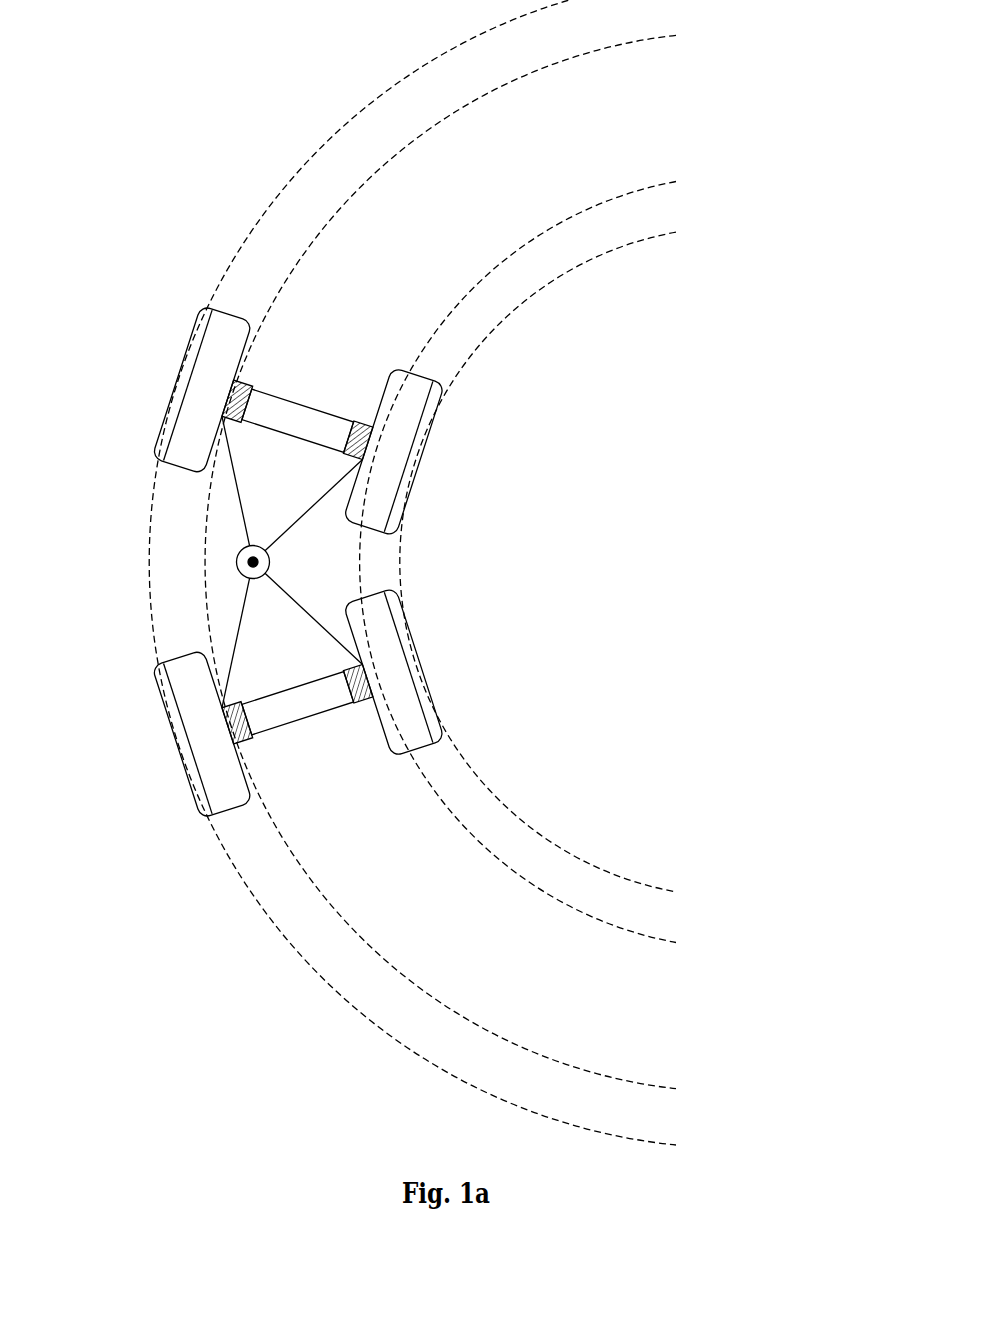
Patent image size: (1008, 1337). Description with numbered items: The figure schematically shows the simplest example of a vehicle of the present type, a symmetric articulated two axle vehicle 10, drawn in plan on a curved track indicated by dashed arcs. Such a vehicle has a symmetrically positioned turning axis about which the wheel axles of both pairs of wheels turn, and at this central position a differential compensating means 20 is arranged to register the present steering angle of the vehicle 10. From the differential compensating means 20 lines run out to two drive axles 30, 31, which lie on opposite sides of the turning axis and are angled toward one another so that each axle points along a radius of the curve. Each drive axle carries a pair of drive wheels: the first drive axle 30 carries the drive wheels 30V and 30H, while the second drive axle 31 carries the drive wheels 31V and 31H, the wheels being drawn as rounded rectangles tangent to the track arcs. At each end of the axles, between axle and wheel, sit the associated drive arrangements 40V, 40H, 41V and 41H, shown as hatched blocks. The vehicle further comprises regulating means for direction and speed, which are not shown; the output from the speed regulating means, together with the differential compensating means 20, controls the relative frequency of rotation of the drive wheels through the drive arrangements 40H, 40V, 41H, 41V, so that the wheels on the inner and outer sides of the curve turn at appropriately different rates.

The two axle vehicle 10 is at (109, 195).
The differential compensating means 20 is at (236, 562).
The drive axle 30 is at (305, 406).
The drive axle 31 is at (306, 720).
The drive wheel 30V is at (176, 382).
The drive wheel 30H is at (417, 468).
The drive wheel 31V is at (179, 748).
The drive wheel 31H is at (421, 665).
The drive arrangement 40V is at (245, 386).
The drive arrangement 40H is at (361, 422).
The drive arrangement 41V is at (250, 743).
The drive arrangement 41H is at (363, 705).